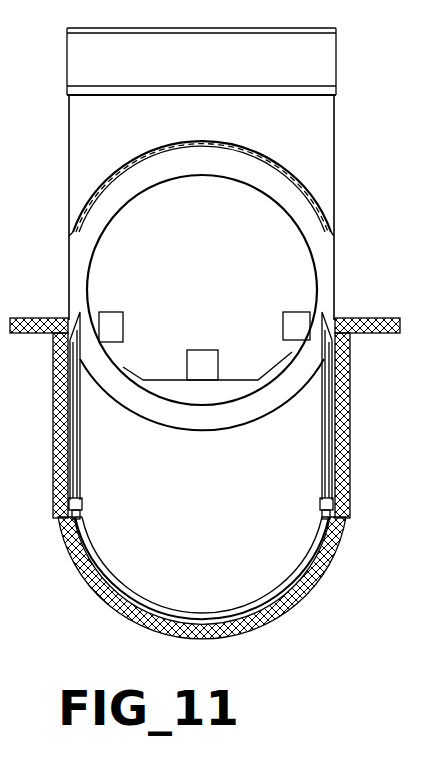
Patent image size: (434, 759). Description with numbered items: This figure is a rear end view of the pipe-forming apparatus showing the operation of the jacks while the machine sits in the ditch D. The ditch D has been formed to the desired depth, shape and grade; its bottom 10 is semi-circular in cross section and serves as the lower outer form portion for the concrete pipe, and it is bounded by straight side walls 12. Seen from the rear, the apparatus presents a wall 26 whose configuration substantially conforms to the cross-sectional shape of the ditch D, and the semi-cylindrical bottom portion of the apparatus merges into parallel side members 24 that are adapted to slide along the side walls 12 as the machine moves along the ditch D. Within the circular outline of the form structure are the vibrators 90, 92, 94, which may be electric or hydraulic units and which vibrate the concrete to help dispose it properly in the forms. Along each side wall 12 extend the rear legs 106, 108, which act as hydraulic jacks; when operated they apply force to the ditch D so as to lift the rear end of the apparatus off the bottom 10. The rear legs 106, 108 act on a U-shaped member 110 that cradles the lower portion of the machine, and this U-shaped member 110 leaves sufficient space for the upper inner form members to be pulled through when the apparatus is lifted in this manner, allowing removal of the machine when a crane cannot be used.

The bottom of the ditch 10 is at (152, 628).
The side walls 12 is at (64, 455).
The side members 24 is at (68, 168).
The wall 26 is at (266, 127).
The vibrator 90 is at (110, 312).
The vibrator 92 is at (200, 350).
The vibrator 94 is at (298, 312).
The rear leg 106 is at (78, 487).
The rear leg 108 is at (322, 490).
The U-shaped member 110 is at (122, 592).
The ditch D is at (86, 589).